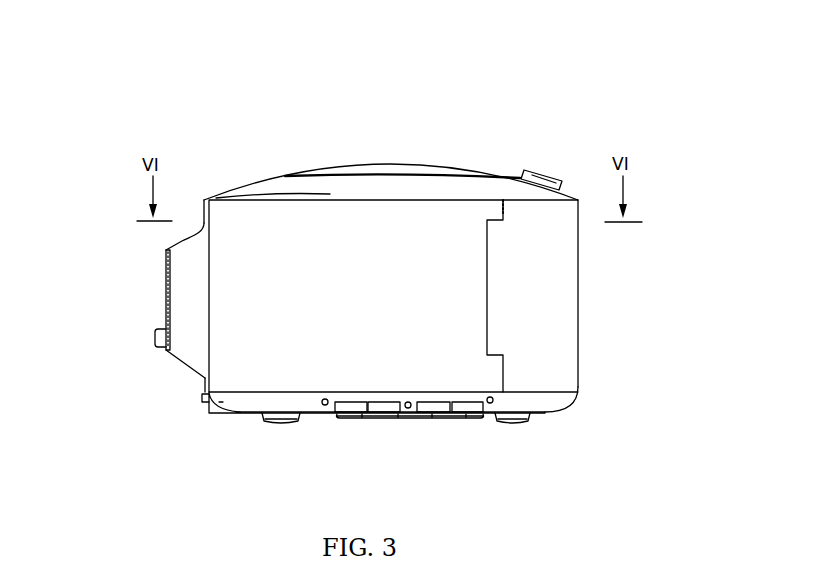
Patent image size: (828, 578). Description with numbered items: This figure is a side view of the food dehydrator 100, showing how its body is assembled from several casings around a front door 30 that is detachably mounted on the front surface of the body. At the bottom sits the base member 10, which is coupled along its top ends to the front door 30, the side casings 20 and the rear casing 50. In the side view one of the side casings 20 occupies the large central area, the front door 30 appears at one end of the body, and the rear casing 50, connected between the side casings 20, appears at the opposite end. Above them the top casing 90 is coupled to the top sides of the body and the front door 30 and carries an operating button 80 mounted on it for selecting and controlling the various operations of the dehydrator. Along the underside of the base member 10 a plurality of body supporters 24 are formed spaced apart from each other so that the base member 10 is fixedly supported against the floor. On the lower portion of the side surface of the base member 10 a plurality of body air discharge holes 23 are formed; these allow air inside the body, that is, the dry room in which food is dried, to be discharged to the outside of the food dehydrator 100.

The food dehydrator 100 is at (188, 172).
The top casing 90 is at (252, 182).
The operating button 80 is at (547, 178).
The rear casing 50 is at (180, 241).
The front door 30 is at (578, 258).
The side casing 20 is at (230, 350).
The base member 10 is at (576, 399).
The body air discharge holes 23 is at (355, 408).
The body supporters 24 is at (508, 476).